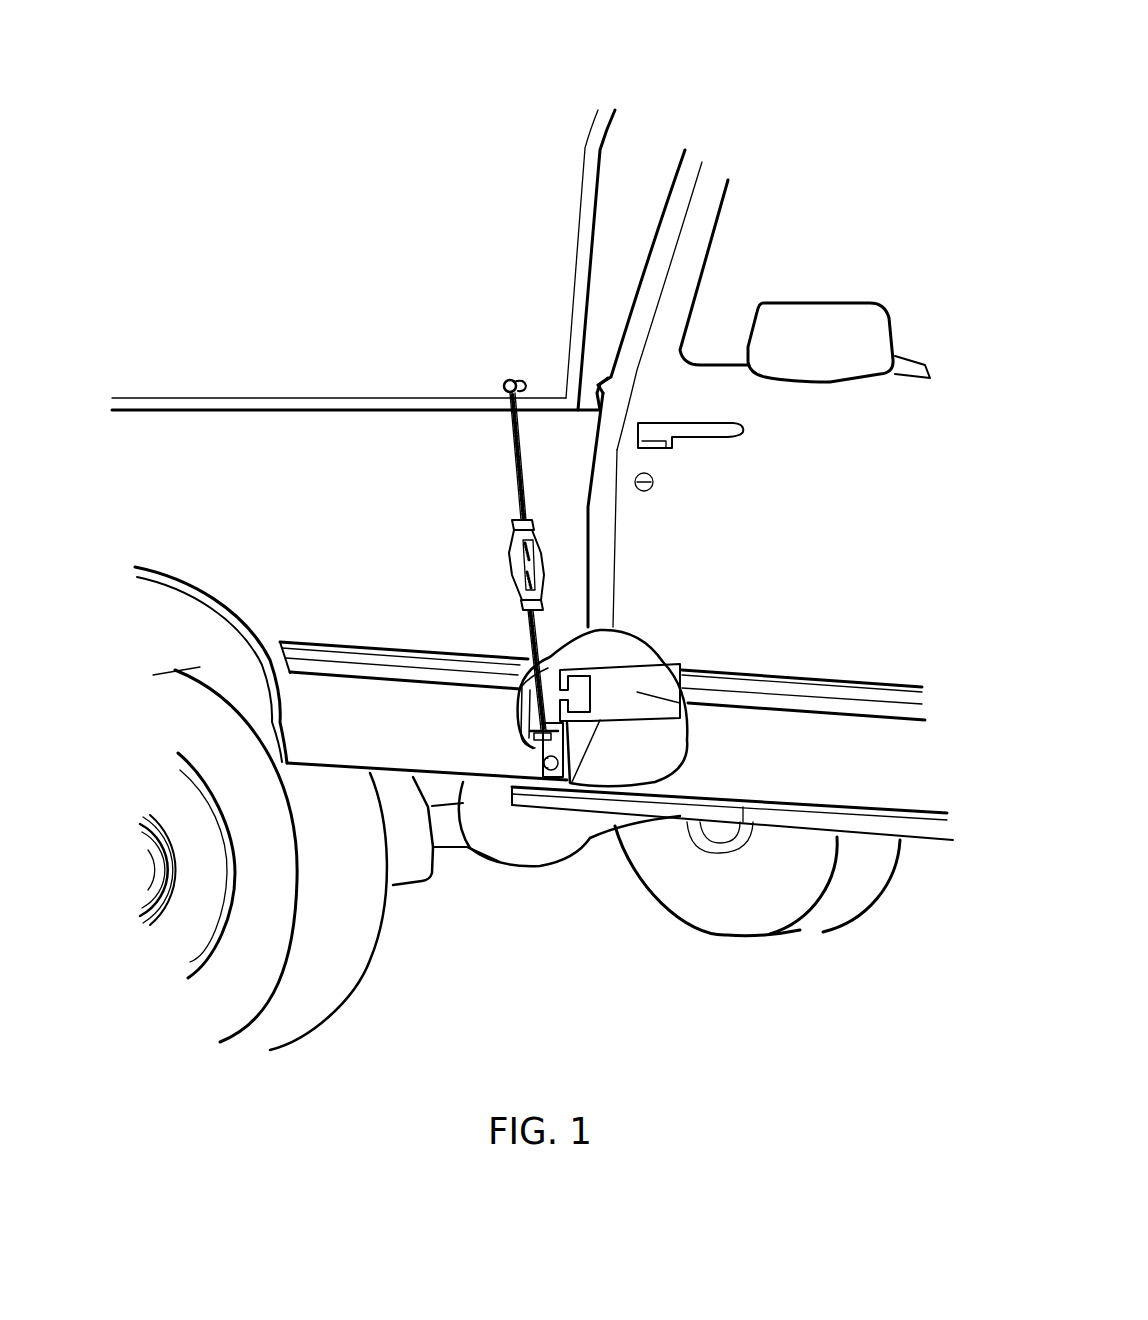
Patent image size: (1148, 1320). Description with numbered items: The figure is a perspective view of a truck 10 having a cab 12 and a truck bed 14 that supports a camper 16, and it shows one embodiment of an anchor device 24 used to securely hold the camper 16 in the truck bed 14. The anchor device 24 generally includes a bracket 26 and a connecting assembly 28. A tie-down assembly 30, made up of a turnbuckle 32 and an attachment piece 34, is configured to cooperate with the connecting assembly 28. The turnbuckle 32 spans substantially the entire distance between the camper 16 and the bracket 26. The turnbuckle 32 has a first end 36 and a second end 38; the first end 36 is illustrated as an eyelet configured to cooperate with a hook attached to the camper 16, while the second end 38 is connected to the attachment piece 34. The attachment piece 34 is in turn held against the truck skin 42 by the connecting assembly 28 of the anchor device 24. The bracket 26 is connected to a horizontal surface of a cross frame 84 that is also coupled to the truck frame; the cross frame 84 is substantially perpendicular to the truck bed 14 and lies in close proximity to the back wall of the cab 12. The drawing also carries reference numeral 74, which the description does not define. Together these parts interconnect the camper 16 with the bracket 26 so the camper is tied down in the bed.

The truck 10 is at (295, 148).
The cab 12 is at (848, 218).
The truck bed 14 is at (232, 494).
The camper 16 is at (412, 347).
The anchor device 24 is at (663, 600).
The bracket 26 is at (607, 762).
The connecting assembly 28 is at (547, 790).
The tie-down assembly 30 is at (490, 493).
The turnbuckle 32 is at (512, 571).
The attachment piece 34 is at (518, 751).
The first end 36 is at (509, 378).
The second end 38 is at (518, 702).
The truck skin 42 is at (377, 737).
The pin 74 is at (545, 777).
The cross frame 84 is at (640, 692).